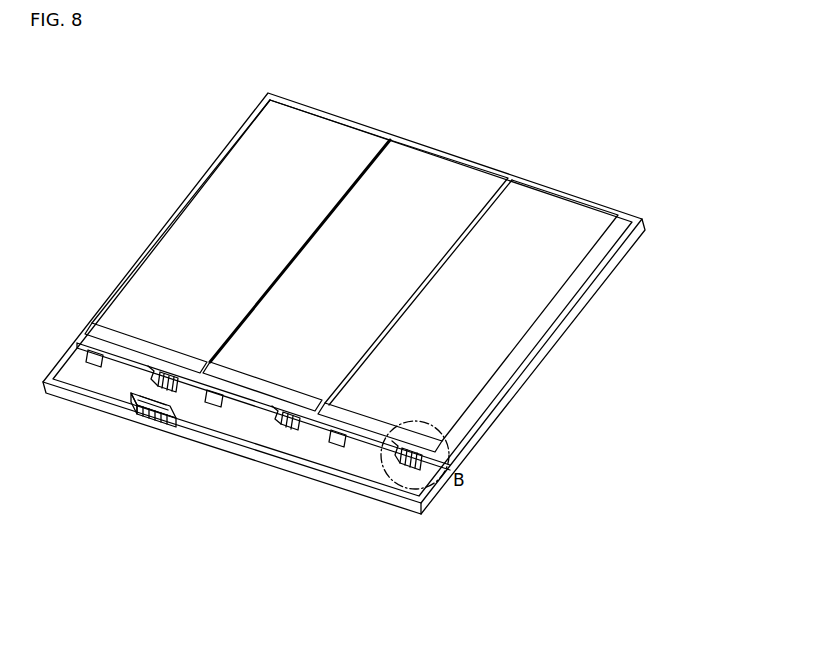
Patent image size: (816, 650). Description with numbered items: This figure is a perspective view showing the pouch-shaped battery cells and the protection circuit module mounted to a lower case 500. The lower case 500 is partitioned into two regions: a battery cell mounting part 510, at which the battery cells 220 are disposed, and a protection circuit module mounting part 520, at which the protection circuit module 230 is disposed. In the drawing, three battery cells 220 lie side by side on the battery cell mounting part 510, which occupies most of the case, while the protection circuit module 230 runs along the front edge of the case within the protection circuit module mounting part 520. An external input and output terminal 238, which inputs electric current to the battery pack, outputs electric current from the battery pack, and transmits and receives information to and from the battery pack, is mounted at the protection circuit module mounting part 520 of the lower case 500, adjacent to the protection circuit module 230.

The lower case 500 is at (194, 142).
The battery cells 220 is at (563, 228).
The battery cell mounting part 510 is at (568, 322).
The protection circuit module mounting part 520 is at (400, 512).
The protection circuit module 230 is at (262, 447).
The external input and output terminal 238 is at (150, 428).